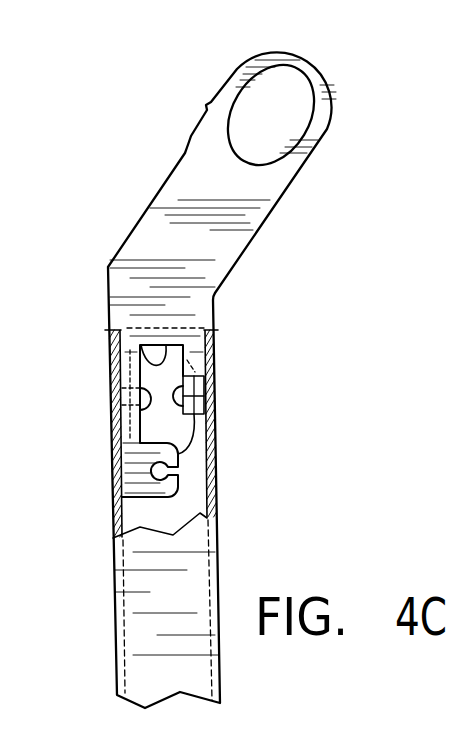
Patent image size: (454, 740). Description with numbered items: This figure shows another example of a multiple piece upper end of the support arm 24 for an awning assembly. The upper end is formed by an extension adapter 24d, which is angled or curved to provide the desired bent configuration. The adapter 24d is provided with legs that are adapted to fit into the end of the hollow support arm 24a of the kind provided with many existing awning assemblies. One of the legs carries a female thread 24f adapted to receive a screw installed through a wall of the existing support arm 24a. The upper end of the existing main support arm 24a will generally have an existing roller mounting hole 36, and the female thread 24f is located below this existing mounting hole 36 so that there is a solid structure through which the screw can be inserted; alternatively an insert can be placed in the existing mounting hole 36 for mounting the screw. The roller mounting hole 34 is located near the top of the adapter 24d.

The support arm 24 is at (298, 288).
The extension adapter 24d is at (270, 213).
The roller mounting hole 34 is at (294, 112).
The hollow support arm 24a is at (110, 500).
The existing roller mounting hole 36 is at (141, 345).
The female thread 24f is at (179, 489).